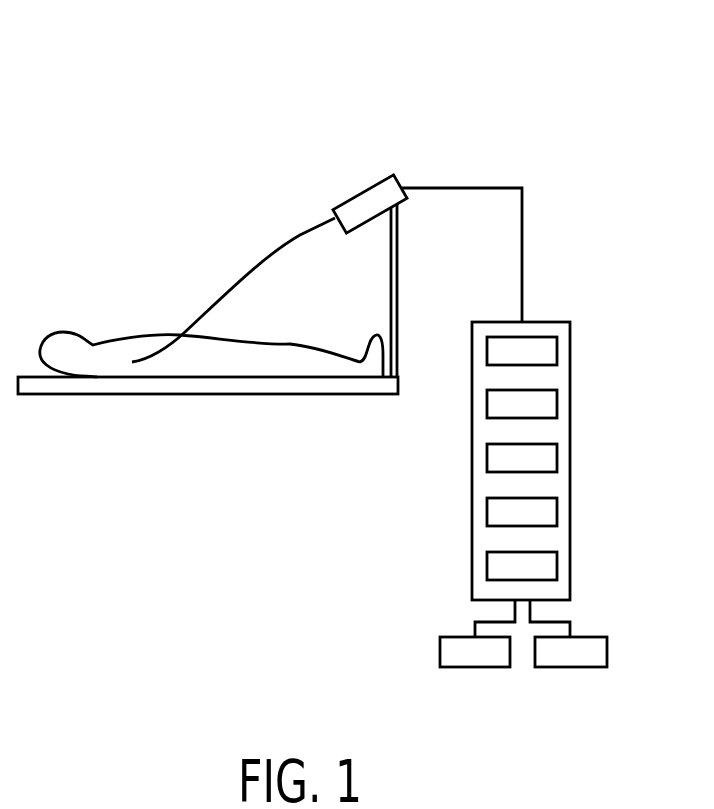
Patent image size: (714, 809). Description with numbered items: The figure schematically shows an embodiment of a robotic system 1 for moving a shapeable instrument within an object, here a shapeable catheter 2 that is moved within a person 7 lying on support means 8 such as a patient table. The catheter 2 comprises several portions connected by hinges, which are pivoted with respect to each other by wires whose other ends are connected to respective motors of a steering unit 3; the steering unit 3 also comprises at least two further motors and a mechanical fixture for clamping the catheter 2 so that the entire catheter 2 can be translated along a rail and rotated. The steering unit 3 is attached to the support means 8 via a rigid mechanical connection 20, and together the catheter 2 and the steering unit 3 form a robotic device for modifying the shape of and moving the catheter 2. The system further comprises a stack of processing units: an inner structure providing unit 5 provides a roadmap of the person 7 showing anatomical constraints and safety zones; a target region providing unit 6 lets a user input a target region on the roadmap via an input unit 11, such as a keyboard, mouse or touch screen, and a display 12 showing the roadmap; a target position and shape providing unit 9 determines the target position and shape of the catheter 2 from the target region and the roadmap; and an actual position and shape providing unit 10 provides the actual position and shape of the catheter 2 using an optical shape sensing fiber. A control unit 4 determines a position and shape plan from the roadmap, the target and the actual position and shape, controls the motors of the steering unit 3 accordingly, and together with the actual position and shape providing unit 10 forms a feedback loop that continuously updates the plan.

The robotic system 1 is at (158, 118).
The shapeable catheter 2 is at (255, 258).
The steering unit 3 is at (352, 195).
The control unit 4 is at (557, 351).
The inner structure providing unit 5 is at (557, 404).
The target region providing unit 6 is at (557, 458).
The person 7 is at (143, 331).
The support means 8 is at (73, 395).
The target position and shape providing unit 9 is at (557, 512).
The actual position and shape providing unit 10 is at (557, 566).
The input unit 11 is at (492, 667).
The display 12 is at (607, 650).
The rigid mechanical connection 20 is at (398, 282).